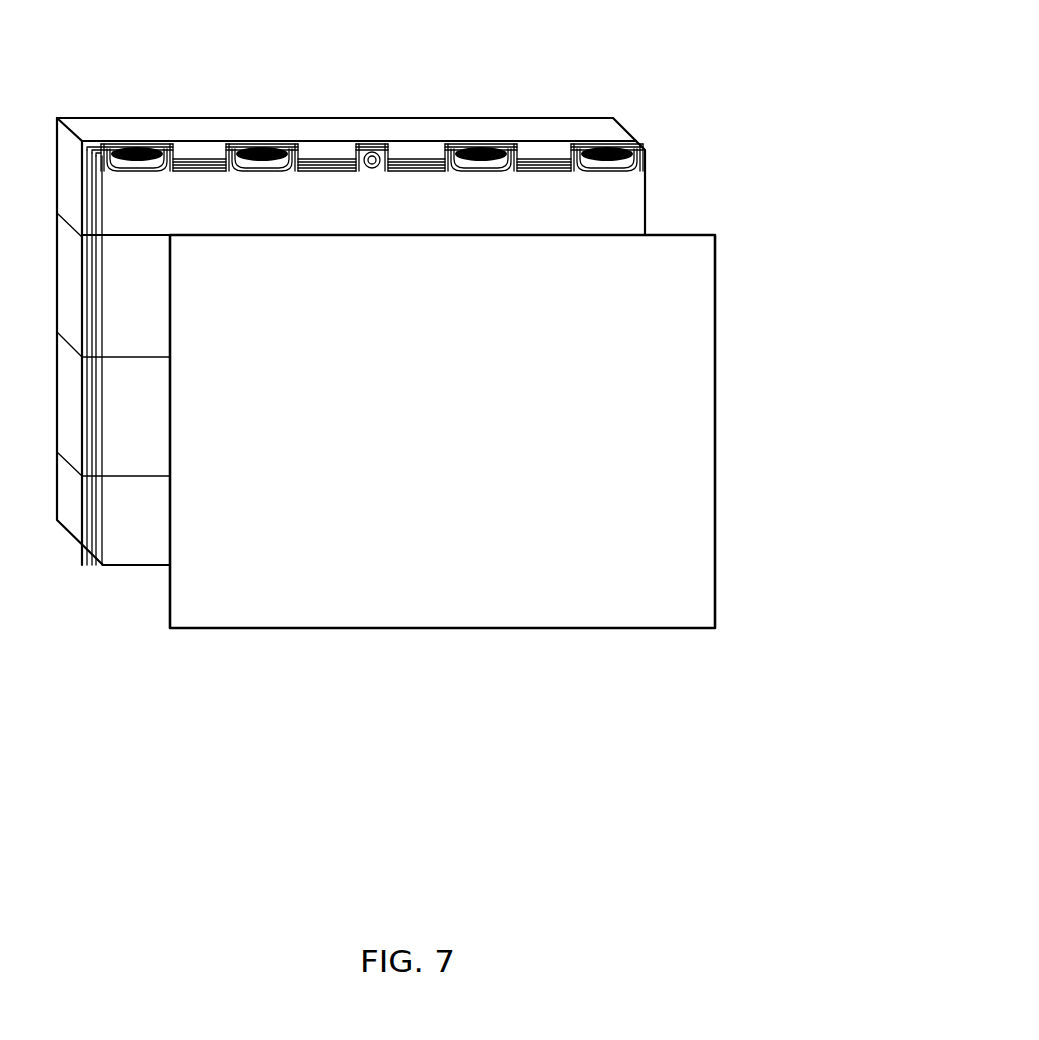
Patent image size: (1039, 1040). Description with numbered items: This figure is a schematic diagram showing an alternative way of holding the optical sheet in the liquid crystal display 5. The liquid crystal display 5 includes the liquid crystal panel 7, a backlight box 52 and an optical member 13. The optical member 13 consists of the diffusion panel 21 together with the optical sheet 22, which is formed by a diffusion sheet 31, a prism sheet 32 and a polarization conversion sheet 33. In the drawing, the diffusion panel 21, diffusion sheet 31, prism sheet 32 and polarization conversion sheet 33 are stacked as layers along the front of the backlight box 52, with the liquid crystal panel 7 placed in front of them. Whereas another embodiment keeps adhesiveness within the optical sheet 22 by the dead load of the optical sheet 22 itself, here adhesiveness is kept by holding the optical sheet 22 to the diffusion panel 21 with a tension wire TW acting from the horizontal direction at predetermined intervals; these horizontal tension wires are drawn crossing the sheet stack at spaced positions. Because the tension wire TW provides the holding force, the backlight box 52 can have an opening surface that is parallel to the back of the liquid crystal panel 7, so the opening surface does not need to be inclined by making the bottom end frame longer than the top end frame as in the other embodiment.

The liquid crystal display 5 is at (708, 59).
The backlight box 52 is at (506, 118).
The liquid crystal panel 7 is at (498, 630).
The optical member 13 is at (418, 517).
The optical sheet 22 is at (280, 500).
The polarization conversion sheet 33 is at (103, 565).
The prism sheet 32 is at (97, 558).
The diffusion sheet 31 is at (82, 476).
The diffusion panel 21 is at (82, 237).
The tension wire TW is at (82, 357).